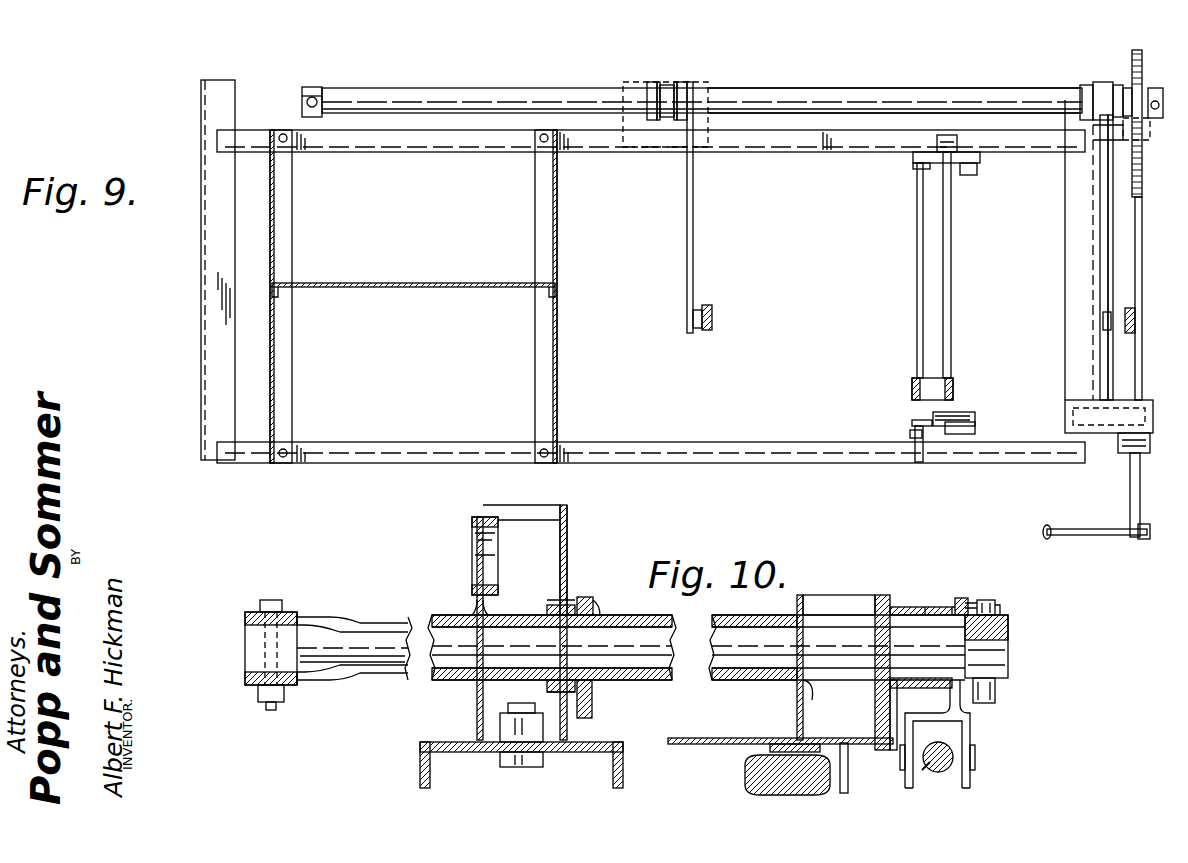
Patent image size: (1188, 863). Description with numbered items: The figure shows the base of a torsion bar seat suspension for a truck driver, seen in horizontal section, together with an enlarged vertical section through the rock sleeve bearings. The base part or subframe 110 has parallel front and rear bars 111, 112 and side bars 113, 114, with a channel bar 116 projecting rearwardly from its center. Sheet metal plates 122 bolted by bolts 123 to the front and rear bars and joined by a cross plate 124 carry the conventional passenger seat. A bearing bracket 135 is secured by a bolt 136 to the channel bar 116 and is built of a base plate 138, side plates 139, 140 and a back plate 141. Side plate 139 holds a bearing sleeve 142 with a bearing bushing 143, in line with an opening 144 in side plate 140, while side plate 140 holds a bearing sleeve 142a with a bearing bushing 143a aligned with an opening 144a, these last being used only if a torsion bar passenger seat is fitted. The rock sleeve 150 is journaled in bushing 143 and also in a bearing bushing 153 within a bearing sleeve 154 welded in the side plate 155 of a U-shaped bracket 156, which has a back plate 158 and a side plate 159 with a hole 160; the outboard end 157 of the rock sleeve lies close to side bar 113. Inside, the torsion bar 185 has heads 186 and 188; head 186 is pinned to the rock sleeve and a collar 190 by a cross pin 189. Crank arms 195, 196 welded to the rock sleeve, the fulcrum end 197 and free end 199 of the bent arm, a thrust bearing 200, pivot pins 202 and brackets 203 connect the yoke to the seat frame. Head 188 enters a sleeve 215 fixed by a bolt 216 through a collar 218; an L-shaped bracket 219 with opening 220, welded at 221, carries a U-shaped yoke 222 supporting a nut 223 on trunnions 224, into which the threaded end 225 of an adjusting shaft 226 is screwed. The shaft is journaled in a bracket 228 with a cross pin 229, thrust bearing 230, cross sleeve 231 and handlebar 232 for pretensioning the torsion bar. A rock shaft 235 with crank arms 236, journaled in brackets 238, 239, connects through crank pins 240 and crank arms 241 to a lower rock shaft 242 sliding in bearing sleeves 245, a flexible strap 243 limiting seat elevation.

In FIG. 9, the base part or subframe 110 is at (198, 368).
In FIG. 9, the front bar 111 is at (750, 444).
In FIG. 9, the rear bar 112 is at (795, 142).
In FIG. 10, the rear bar 112 is at (698, 725).
In FIG. 9, the side bar 113 is at (205, 278).
In FIG. 9, the side bar 114 is at (1065, 312).
In FIG. 10, the side bar 114 is at (844, 793).
In FIG. 9, the channel bar 116 is at (628, 85).
In FIG. 10, the channel bar 116 is at (420, 762).
In FIG. 9, the sheet metal plates 122 is at (283, 358).
In FIG. 9, the bolts 123 is at (540, 142).
In FIG. 9, the cross plate 124 is at (425, 283).
In FIG. 9, the bearing bracket 135 is at (665, 115).
In FIG. 10, the bearing bracket 135 is at (588, 609).
In FIG. 10, the bolt 136 is at (525, 770).
In FIG. 10, the base plate 138 is at (498, 765).
In FIG. 9, the side plate 139 is at (682, 121).
In FIG. 10, the side plate 139 is at (568, 520).
In FIG. 9, the side plate 140 is at (652, 121).
In FIG. 10, the side plate 140 is at (477, 715).
In FIG. 9, the back plate 141 is at (667, 86).
In FIG. 10, the back plate 141 is at (530, 507).
In FIG. 9, the bearing sleeve 142 is at (668, 121).
In FIG. 10, the bearing sleeve 142 is at (556, 600).
In FIG. 9, the bearing sleeve 142a is at (678, 86).
In FIG. 10, the bearing sleeve 142a is at (472, 521).
In FIG. 10, the bearing bushing 143 is at (552, 606).
In FIG. 10, the bearing bushing 143a is at (472, 541).
In FIG. 10, the opening 144 is at (477, 618).
In FIG. 10, the circular opening 144a is at (567, 548).
In FIG. 9, the rock sleeve 150 is at (810, 90).
In FIG. 10, the rock sleeve 150 is at (758, 608).
In FIG. 10, the bearing bushing 153 is at (958, 600).
In FIG. 9, the bearing sleeve 154 is at (1078, 55).
In FIG. 10, the bearing sleeve 154 is at (928, 610).
In FIG. 9, the side plate 155 is at (1142, 125).
In FIG. 10, the side plate 155 is at (905, 607).
In FIG. 9, the bracket 156 is at (1086, 79).
In FIG. 10, the bracket 156 is at (814, 647).
In FIG. 9, the end of rock sleeve 157 is at (430, 90).
In FIG. 10, the end of rock sleeve 157 is at (245, 615).
In FIG. 9, the back plate 158 is at (1098, 84).
In FIG. 10, the back plate 158 is at (858, 591).
In FIG. 9, the side plate 159 is at (1085, 86).
In FIG. 10, the side plate 159 is at (797, 710).
In FIG. 10, the hole 160 is at (822, 694).
In FIG. 10, the torsion bar 185 is at (360, 635).
In FIG. 10, the head 186 is at (245, 637).
In FIG. 10, the end head 188 is at (1008, 637).
In FIG. 9, the cross pin 189 is at (312, 87).
In FIG. 10, the cross pin 189 is at (270, 600).
In FIG. 9, the cylindrical collar 190 is at (322, 92).
In FIG. 10, the cylindrical collar 190 is at (295, 612).
In FIG. 9, the crank arm 195 is at (1097, 226).
In FIG. 10, the crank arm 195 is at (886, 722).
In FIG. 9, the crank arm 196 is at (696, 240).
In FIG. 10, the crank arm 196 is at (598, 712).
In FIG. 9, the fulcrum end 197 is at (1100, 128).
In FIG. 10, the fulcrum end 197 is at (880, 598).
In FIG. 9, the free end 199 is at (1108, 292).
In FIG. 10, the thrust bearing 200 is at (583, 597).
In FIG. 9, the pivot pin 202 is at (703, 318).
In FIG. 9, the bracket 203 is at (713, 326).
In FIG. 10, the sleeve 215 is at (1008, 626).
In FIG. 10, the bolt 216 is at (1000, 610).
In FIG. 9, the collar 218 is at (1160, 95).
In FIG. 10, the collar 218 is at (995, 690).
In FIG. 9, the L-shaped bracket 219 is at (1130, 88).
In FIG. 10, the L-shaped bracket 219 is at (992, 603).
In FIG. 10, the circular opening 220 is at (970, 604).
In FIG. 10, the weld 221 is at (962, 703).
In FIG. 10, the U-shaped yoke 222 is at (971, 730).
In FIG. 10, the nut 223 is at (952, 790).
In FIG. 10, the trunnions 224 is at (976, 757).
In FIG. 9, the threaded end 225 is at (1138, 56).
In FIG. 10, the threaded end 225 is at (940, 772).
In FIG. 9, the adjusting shaft 226 is at (1142, 266).
In FIG. 10, the adjusting shaft 226 is at (927, 770).
In FIG. 9, the bracket 228 is at (1150, 400).
In FIG. 9, the cross pin 229 is at (1122, 446).
In FIG. 9, the thrust bearing 230 is at (1142, 448).
In FIG. 9, the cross sleeve 231 is at (1142, 539).
In FIG. 9, the handlebar 232 is at (1100, 528).
In FIG. 9, the rock shaft 235 is at (951, 278).
In FIG. 9, the crank arms 236 is at (968, 158).
In FIG. 9, the bracket 238 is at (925, 445).
In FIG. 9, the bracket 239 is at (940, 138).
In FIG. 9, the crank pin 240 is at (968, 172).
In FIG. 9, the crank arms 241 is at (918, 165).
In FIG. 9, the rock shaft 242 is at (917, 225).
In FIG. 9, the flexible strap 243 is at (912, 385).
In FIG. 9, the bearing sleeves 245 is at (913, 158).